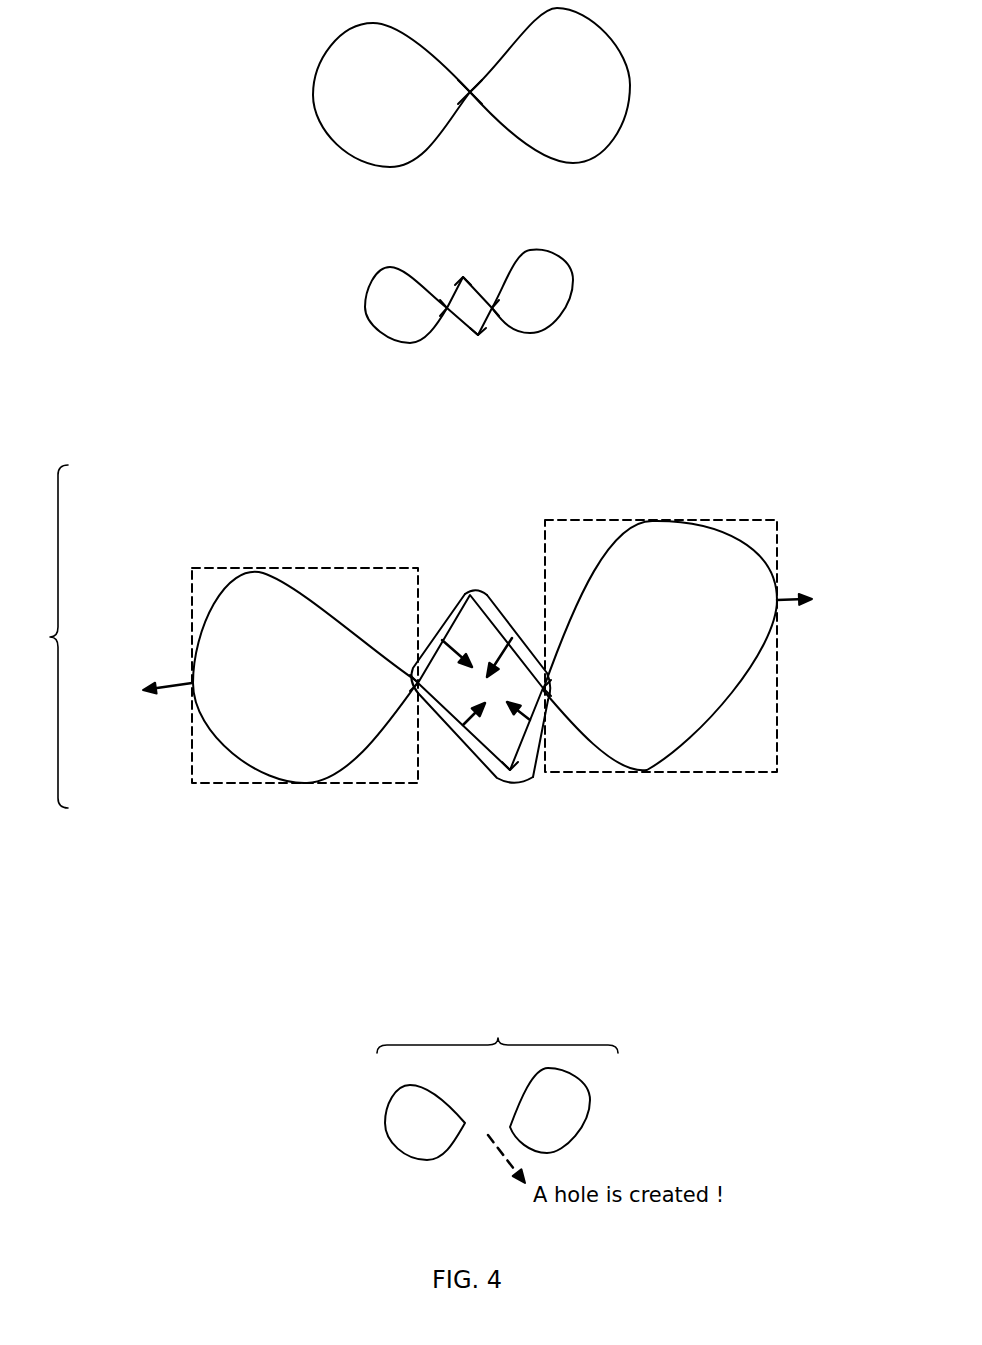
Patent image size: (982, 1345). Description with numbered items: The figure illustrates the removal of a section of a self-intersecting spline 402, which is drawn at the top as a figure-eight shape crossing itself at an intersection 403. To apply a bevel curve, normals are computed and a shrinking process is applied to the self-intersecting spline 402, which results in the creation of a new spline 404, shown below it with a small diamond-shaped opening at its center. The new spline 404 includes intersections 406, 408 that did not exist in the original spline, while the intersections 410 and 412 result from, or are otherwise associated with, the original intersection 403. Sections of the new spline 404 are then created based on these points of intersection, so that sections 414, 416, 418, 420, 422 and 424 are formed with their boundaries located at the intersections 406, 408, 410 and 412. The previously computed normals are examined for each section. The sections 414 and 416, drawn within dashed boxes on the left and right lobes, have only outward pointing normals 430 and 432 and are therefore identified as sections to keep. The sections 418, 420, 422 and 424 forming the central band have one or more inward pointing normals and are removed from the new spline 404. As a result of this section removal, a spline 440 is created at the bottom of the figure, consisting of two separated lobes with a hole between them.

The self-intersecting spline 402 is at (320, 63).
The intersection 403 is at (471, 98).
The new spline 404 is at (382, 272).
The intersection 406 is at (447, 311).
The intersection 408 is at (495, 311).
The intersection 410 is at (478, 338).
The intersection 412 is at (463, 272).
The section 414 is at (282, 567).
The section 416 is at (730, 773).
The section 418 is at (461, 732).
The section 420 is at (524, 634).
The section 422 is at (456, 590).
The section 424 is at (552, 698).
The outward pointing normal 430 is at (175, 693).
The outward pointing normal 432 is at (778, 603).
The spline 440 is at (497, 1088).